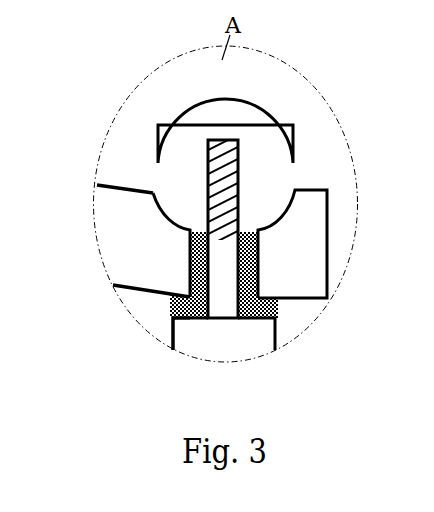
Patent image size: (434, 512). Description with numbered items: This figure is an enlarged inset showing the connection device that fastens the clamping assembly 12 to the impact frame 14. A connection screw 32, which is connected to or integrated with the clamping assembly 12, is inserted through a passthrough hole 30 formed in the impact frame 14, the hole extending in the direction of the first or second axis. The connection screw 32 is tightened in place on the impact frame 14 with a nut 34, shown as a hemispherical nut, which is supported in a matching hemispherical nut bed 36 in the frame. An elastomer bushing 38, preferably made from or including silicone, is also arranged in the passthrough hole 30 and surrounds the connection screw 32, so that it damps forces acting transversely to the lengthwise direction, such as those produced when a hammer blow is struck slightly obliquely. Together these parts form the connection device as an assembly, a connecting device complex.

The clamping assembly 12 is at (237, 353).
The impact frame 14 is at (113, 222).
The passthrough hole 30 is at (187, 257).
The connection screw 32 is at (223, 283).
The nut 34 is at (275, 147).
The hemispherical nut bed 36 is at (277, 222).
The elastomer bushing 38 is at (170, 313).